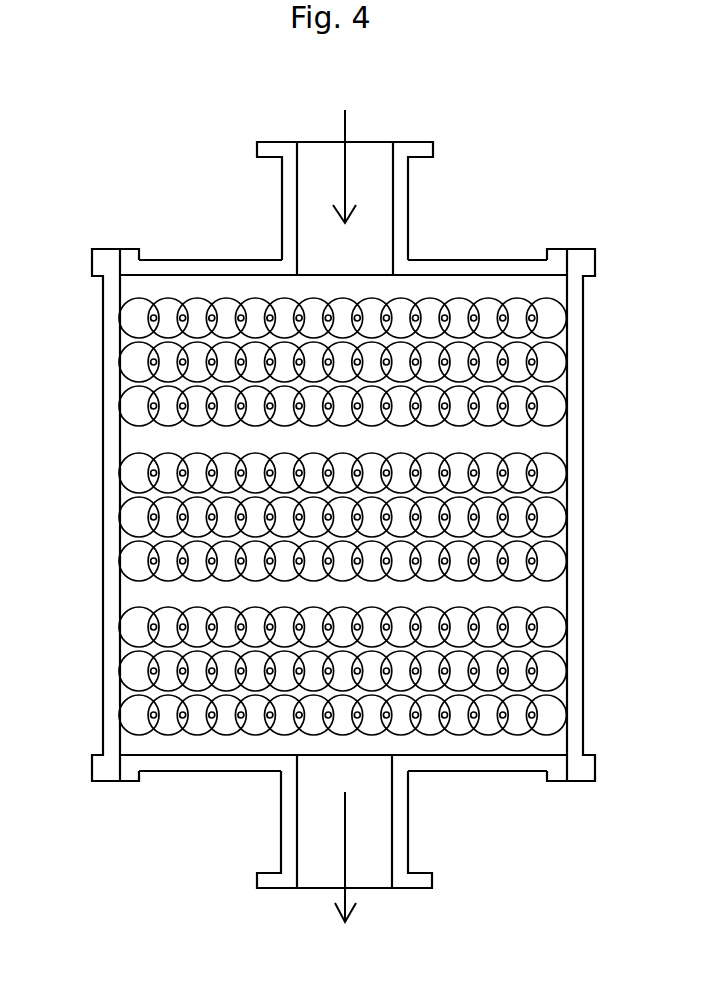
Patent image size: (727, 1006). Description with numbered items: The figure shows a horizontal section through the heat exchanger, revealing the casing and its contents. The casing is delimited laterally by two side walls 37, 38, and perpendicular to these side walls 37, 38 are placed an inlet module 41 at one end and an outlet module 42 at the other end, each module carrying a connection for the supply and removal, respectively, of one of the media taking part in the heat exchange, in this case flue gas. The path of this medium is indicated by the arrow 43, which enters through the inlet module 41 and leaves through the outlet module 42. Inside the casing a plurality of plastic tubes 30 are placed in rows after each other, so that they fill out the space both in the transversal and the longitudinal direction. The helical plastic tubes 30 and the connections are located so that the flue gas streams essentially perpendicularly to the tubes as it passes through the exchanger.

The plastic tubes 30 is at (122, 322).
The side wall 37 is at (110, 526).
The side wall 38 is at (575, 520).
The inlet module 41 is at (493, 267).
The outlet module 42 is at (482, 762).
The arrow 43 is at (365, 180).